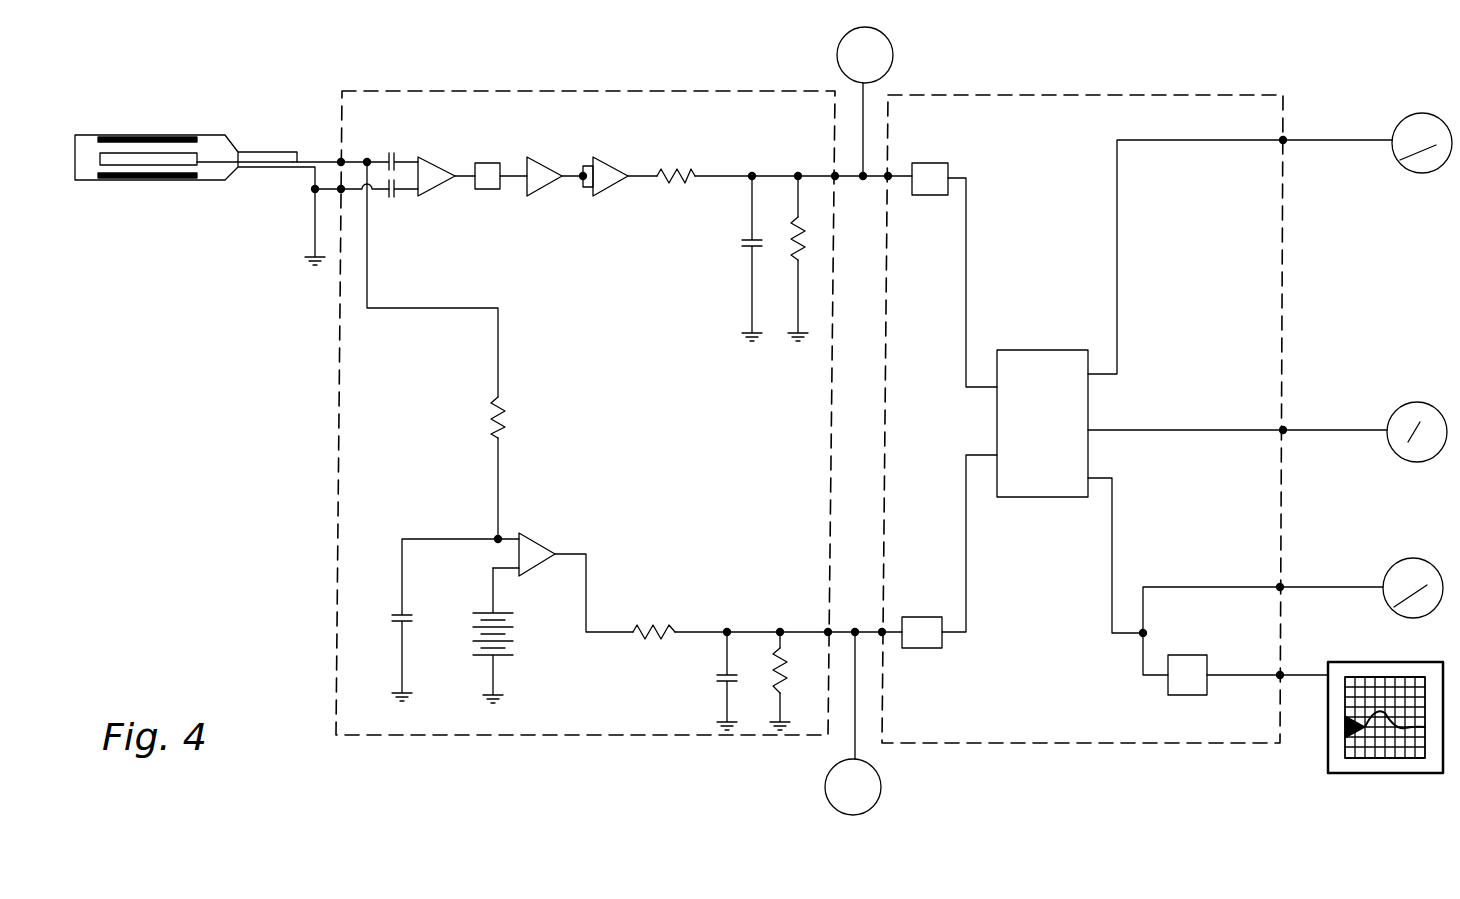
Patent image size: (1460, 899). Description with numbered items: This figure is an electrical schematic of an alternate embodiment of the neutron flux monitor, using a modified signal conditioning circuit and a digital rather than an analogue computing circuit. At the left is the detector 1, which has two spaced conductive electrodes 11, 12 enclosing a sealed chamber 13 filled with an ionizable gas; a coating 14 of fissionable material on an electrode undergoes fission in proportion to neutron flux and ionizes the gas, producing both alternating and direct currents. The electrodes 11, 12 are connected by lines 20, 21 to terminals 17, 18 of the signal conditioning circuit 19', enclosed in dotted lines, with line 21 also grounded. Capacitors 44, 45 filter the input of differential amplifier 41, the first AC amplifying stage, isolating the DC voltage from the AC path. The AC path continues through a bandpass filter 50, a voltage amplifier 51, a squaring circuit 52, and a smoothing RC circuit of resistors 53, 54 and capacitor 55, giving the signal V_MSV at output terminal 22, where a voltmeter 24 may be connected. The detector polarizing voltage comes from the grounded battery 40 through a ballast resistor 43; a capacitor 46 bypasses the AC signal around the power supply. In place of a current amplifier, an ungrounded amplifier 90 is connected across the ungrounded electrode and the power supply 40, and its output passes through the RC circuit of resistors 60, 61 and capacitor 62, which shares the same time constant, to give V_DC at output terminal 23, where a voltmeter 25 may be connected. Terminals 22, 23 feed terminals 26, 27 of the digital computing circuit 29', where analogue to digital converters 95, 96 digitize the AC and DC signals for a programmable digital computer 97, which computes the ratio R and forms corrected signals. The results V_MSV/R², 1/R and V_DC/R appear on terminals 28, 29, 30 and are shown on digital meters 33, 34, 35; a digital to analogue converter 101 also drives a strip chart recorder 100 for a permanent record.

The detector 1 is at (195, 137).
The conductive electrode 11 is at (130, 136).
The conductive electrode 12 is at (196, 151).
The chamber 13 is at (168, 146).
The coating of neutron activatable material 14 is at (125, 180).
The terminal 17 is at (344, 158).
The terminal 18 is at (345, 192).
The signal conditioning circuit 19' is at (585, 392).
The line 20 is at (308, 157).
The line 21 is at (303, 172).
The output terminal 22 is at (832, 176).
The output terminal 23 is at (826, 629).
The voltmeter 24 is at (893, 54).
The voltmeter 25 is at (883, 781).
The terminal 26 is at (892, 172).
The terminal 27 is at (884, 628).
The terminal 28 is at (1281, 140).
The terminal 29 is at (1237, 415).
The digital computing circuit 29' is at (1082, 396).
The terminal 30 is at (1277, 587).
The digital meter 33 is at (1413, 113).
The digital meter 34 is at (1413, 402).
The digital meter 35 is at (1408, 558).
The battery 40 is at (505, 655).
The differential amplifier 41 is at (437, 164).
The ballast resistor 43 is at (505, 420).
The capacitor 44 is at (392, 158).
The capacitor 45 is at (397, 198).
The capacitor 46 is at (400, 614).
The bandpass filter 50 is at (491, 163).
The voltage amplifier 51 is at (548, 165).
The squaring circuit 52 is at (612, 166).
The resistor 53 is at (695, 172).
The resistor 54 is at (795, 240).
The capacitor 55 is at (745, 244).
The resistor 60 is at (656, 627).
The resistor 61 is at (786, 670).
The capacitor 62 is at (720, 681).
The ungrounded amplifier 90 is at (538, 549).
The analogue to digital converter 95 is at (930, 196).
The analogue to digital converter 96 is at (930, 648).
The programmable digital computer 97 is at (1042, 350).
The strip chart recorder 100 is at (1380, 662).
The digital to analogue converter 101 is at (1180, 695).